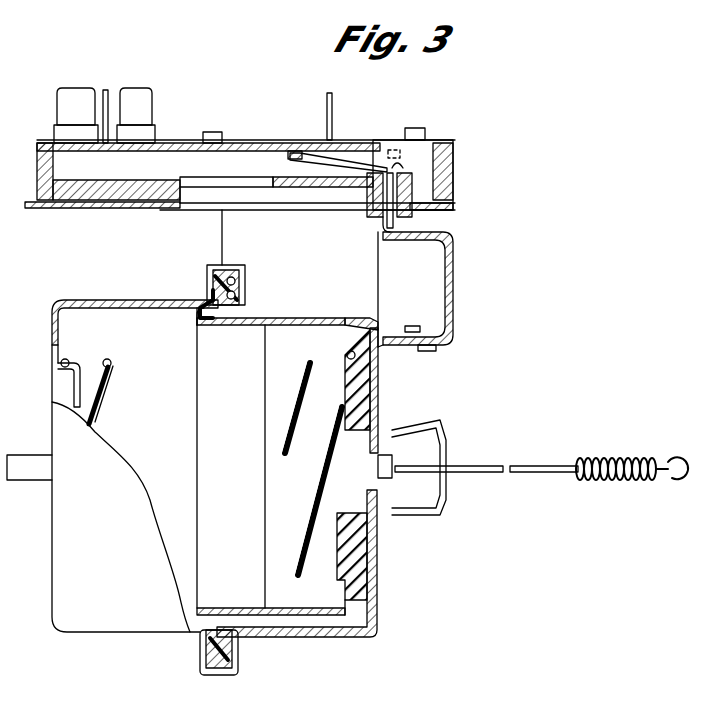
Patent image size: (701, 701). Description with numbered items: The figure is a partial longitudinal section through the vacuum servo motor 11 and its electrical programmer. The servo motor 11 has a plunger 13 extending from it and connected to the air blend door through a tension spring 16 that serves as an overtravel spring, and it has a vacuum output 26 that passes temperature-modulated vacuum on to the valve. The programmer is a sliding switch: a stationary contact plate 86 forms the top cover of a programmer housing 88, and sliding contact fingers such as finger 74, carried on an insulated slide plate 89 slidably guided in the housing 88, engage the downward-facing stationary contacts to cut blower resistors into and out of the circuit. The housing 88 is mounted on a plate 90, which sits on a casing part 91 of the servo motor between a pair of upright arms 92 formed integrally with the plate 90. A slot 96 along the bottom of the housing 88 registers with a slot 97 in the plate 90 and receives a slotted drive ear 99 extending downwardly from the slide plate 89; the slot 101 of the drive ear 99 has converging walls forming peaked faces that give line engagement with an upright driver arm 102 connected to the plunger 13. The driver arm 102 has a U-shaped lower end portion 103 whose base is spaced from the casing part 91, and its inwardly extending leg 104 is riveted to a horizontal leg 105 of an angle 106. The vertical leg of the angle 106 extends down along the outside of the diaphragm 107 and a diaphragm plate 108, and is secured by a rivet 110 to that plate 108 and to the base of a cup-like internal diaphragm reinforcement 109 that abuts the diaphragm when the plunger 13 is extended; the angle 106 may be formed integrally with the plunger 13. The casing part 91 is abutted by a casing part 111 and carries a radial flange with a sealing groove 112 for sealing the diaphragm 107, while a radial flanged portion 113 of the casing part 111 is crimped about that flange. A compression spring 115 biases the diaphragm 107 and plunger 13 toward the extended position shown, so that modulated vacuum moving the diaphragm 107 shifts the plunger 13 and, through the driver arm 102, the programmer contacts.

The vacuum servo motor 11 is at (130, 636).
The plunger 13 is at (522, 464).
The tension spring 16 is at (617, 458).
The vacuum output 26 is at (29, 481).
The sliding contact finger 74 is at (288, 160).
The stationary contact plate 86 is at (172, 152).
The programmer housing 88 is at (456, 186).
The insulated slide plate 89 is at (312, 190).
The plate 90 is at (68, 206).
The casing part 91 is at (297, 638).
The upright arm 92 is at (380, 270).
The slot 96 is at (193, 186).
The slot 97 is at (200, 212).
The slotted drive ear 99 is at (366, 218).
The slot 101 is at (408, 229).
The upright driver arm 102 is at (385, 236).
The U-shaped lower end portion 103 is at (456, 292).
The inwardly extending leg 104 is at (432, 336).
The horizontal leg 105 is at (438, 348).
The angle 106 is at (385, 362).
The diaphragm 107 is at (255, 327).
The diaphragm plate 108 is at (380, 392).
The internal diaphragm reinforcement 109 is at (300, 612).
The rivet 110 is at (395, 462).
The casing part 111 is at (98, 298).
The sealing groove 112 is at (233, 266).
The radial flanged portion 113 is at (208, 292).
The compression spring 115 is at (285, 428).